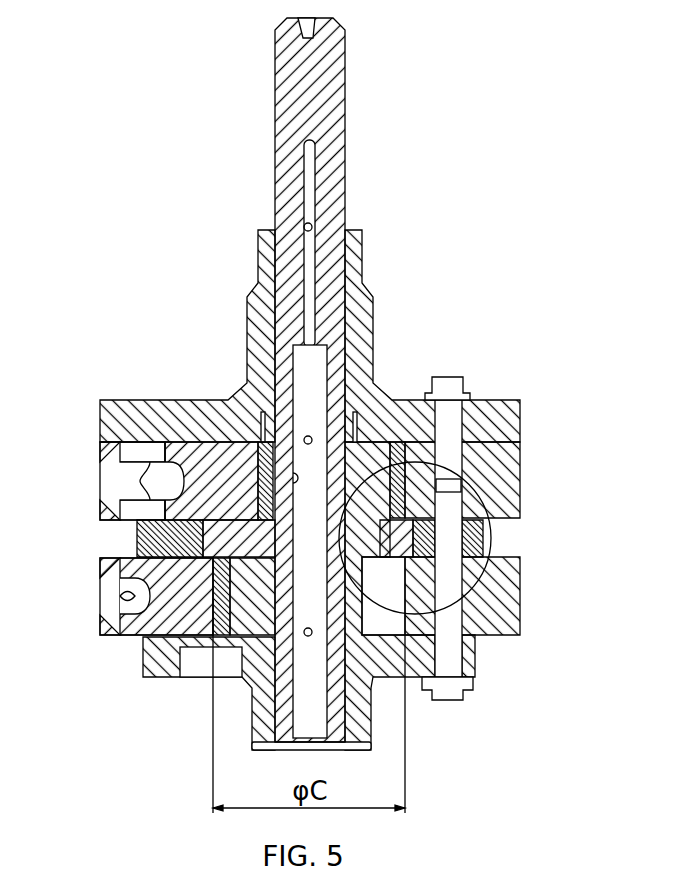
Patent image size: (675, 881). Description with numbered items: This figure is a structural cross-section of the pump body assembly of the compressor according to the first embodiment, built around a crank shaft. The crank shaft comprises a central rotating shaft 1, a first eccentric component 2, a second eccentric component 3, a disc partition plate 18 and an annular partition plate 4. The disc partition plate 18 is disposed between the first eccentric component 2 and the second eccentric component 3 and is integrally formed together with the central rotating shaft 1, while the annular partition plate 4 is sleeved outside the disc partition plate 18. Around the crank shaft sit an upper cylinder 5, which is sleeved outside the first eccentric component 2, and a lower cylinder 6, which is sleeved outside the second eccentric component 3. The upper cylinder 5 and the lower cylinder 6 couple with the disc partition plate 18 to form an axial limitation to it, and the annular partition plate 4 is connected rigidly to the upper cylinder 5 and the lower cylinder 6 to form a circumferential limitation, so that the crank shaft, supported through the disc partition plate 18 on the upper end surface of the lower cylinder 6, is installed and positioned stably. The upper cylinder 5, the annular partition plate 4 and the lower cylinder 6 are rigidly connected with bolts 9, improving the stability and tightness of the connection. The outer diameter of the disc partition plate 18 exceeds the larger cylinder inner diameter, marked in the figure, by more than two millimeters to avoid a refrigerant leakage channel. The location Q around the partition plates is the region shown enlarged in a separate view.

The central rotating shaft 1 is at (327, 70).
The first eccentric component 2 is at (370, 462).
The second eccentric component 3 is at (247, 600).
The annular partition plate 4 is at (487, 528).
The upper cylinder 5 is at (488, 468).
The lower cylinder 6 is at (478, 615).
The bolt 9 is at (453, 662).
The disc partition plate 18 is at (400, 548).
The location Q is at (488, 545).